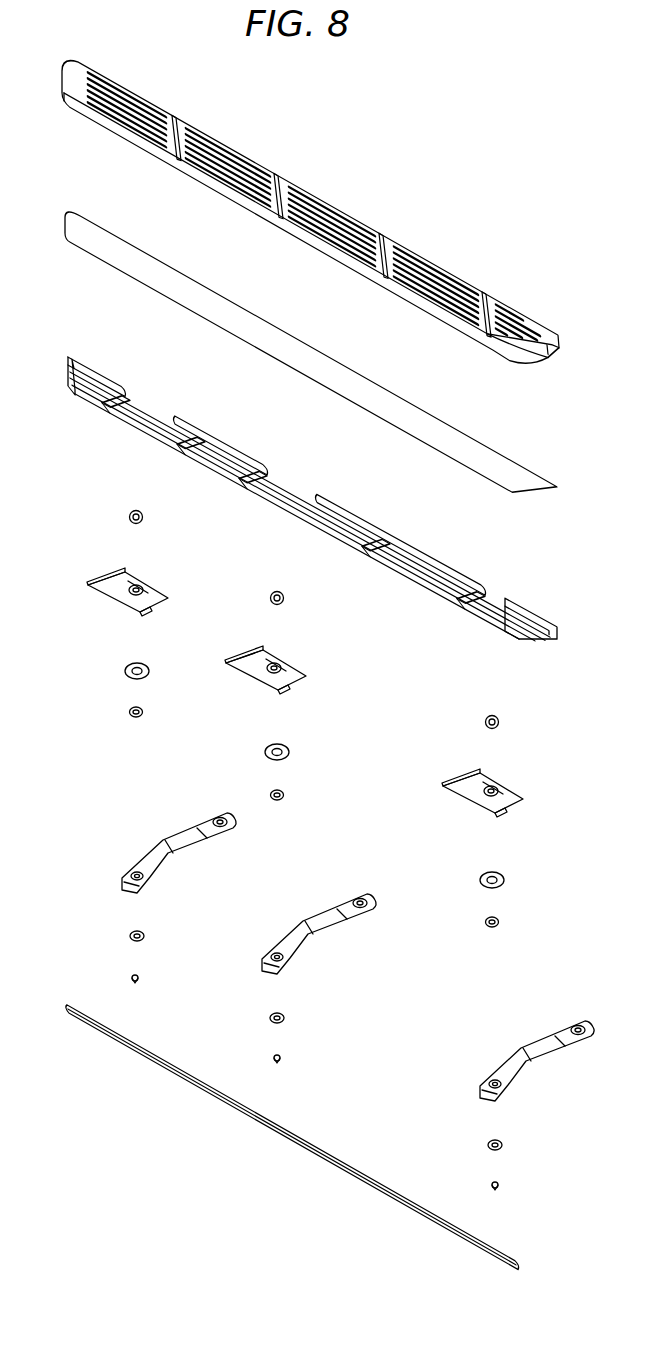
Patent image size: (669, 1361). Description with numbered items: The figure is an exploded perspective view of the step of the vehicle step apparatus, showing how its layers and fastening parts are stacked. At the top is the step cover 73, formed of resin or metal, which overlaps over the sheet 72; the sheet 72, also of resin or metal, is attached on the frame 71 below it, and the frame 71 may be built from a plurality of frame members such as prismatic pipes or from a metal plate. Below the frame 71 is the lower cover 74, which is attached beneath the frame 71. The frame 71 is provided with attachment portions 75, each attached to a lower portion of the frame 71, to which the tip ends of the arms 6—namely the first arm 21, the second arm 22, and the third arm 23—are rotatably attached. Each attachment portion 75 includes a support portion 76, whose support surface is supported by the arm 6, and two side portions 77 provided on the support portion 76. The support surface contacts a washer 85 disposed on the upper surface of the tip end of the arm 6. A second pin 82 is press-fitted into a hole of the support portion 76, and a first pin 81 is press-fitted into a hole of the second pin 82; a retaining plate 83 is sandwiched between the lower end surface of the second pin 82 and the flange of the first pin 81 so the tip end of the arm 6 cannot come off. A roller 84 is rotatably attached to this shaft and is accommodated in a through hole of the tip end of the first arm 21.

The step cover 73 is at (222, 137).
The sheet 72 is at (218, 286).
The frame 71 is at (310, 509).
The attachment portion 75 is at (265, 685).
The support portion 76 is at (158, 591).
The side portions 77 is at (108, 574).
The second pin 82 is at (128, 517).
The washer 85 is at (124, 671).
The roller 84 is at (128, 712).
The retaining plate 83 is at (128, 936).
The first pin 81 is at (130, 978).
The first arm 21 is at (152, 856).
The second arm 22 is at (290, 934).
The third arm 23 is at (510, 1060).
The arms 6 is at (322, 957).
The lower cover 74 is at (152, 1064).